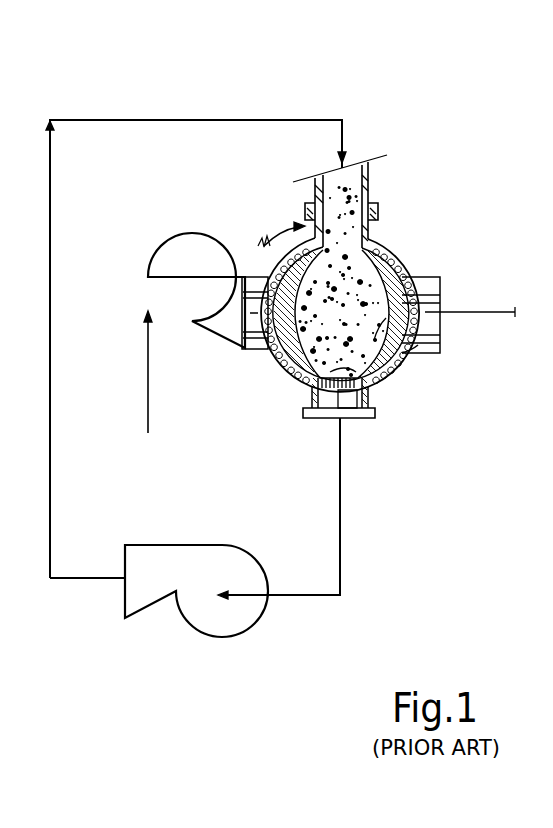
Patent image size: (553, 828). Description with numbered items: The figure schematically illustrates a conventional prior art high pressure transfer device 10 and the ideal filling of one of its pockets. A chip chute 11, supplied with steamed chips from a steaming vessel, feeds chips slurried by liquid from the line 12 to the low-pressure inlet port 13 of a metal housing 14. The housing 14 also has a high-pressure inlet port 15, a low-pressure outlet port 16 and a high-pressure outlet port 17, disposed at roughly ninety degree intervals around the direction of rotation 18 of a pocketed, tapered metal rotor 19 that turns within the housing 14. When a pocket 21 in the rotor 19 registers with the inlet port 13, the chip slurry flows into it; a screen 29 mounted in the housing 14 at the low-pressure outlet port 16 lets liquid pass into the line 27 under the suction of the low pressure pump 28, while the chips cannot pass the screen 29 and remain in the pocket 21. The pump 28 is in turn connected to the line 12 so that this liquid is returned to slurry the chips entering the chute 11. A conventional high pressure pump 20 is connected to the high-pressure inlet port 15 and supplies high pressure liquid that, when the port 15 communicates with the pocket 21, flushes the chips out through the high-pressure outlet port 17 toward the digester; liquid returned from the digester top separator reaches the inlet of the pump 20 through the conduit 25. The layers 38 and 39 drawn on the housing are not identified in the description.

The high pressure transfer device 10 is at (466, 173).
The chip chute 11 is at (372, 185).
The line 12 is at (213, 119).
The low-pressure inlet port 13 is at (379, 224).
The metal housing 14 is at (413, 276).
The high-pressure inlet port 15 is at (262, 352).
The low-pressure outlet port 16 is at (378, 412).
The high-pressure outlet port 17 is at (428, 350).
The direction of rotation 18 is at (277, 240).
The rotor 19 is at (442, 304).
The high pressure pump 20 is at (138, 308).
The pocket 21 is at (404, 355).
The conduit 25 is at (150, 403).
The line 27 is at (342, 519).
The low pressure pump 28 is at (211, 578).
The screen 29 is at (334, 398).
The insulation layer 38 is at (394, 262).
The molten material 39 is at (396, 372).